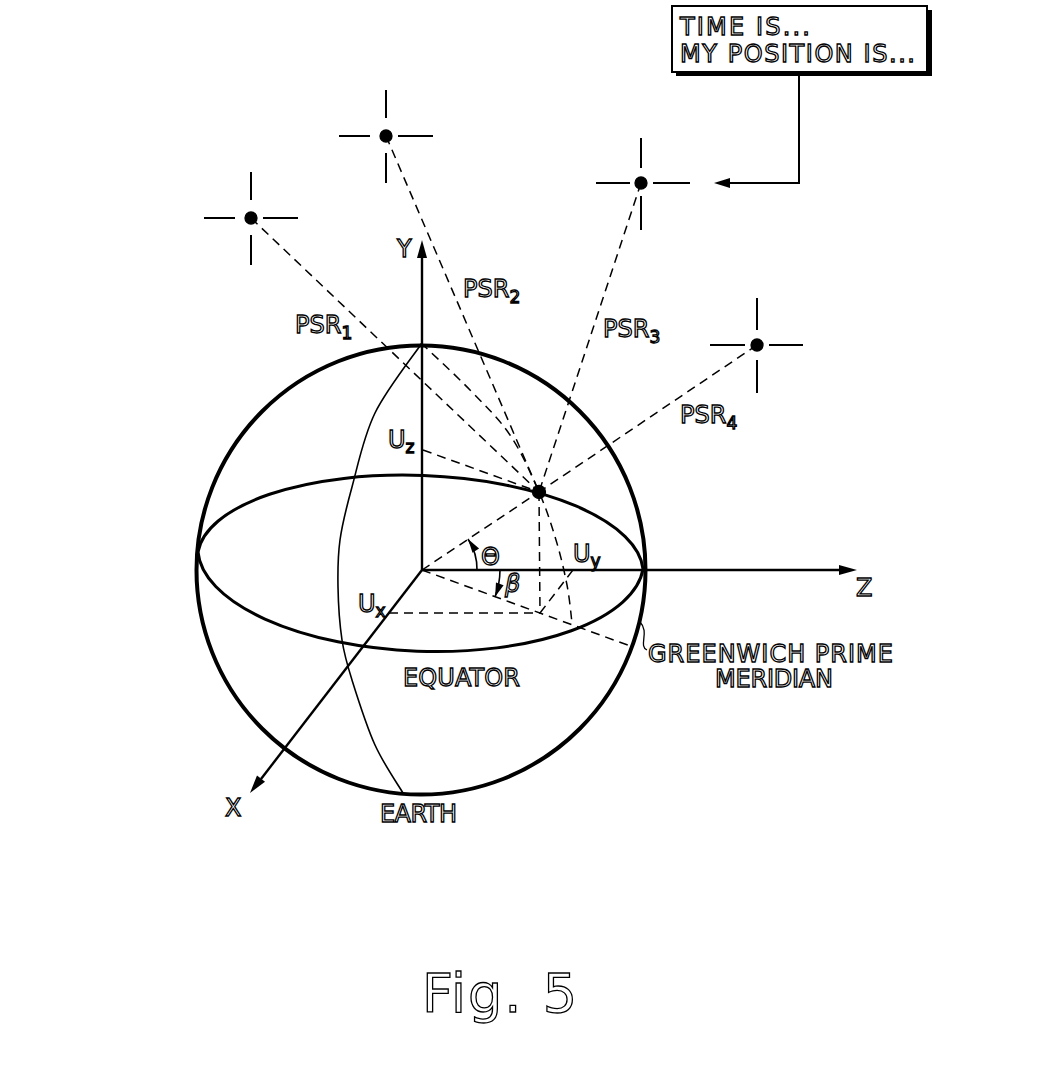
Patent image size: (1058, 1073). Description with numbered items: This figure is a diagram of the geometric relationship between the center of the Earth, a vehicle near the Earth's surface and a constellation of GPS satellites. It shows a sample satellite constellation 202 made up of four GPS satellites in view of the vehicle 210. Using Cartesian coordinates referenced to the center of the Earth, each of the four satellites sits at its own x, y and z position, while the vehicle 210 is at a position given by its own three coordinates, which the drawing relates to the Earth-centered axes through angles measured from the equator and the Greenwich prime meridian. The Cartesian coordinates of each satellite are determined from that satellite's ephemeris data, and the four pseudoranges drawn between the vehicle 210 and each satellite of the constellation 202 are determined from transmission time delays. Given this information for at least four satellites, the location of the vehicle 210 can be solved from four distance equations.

The satellite constellation 202 is at (531, 59).
The vehicle 210 is at (545, 493).